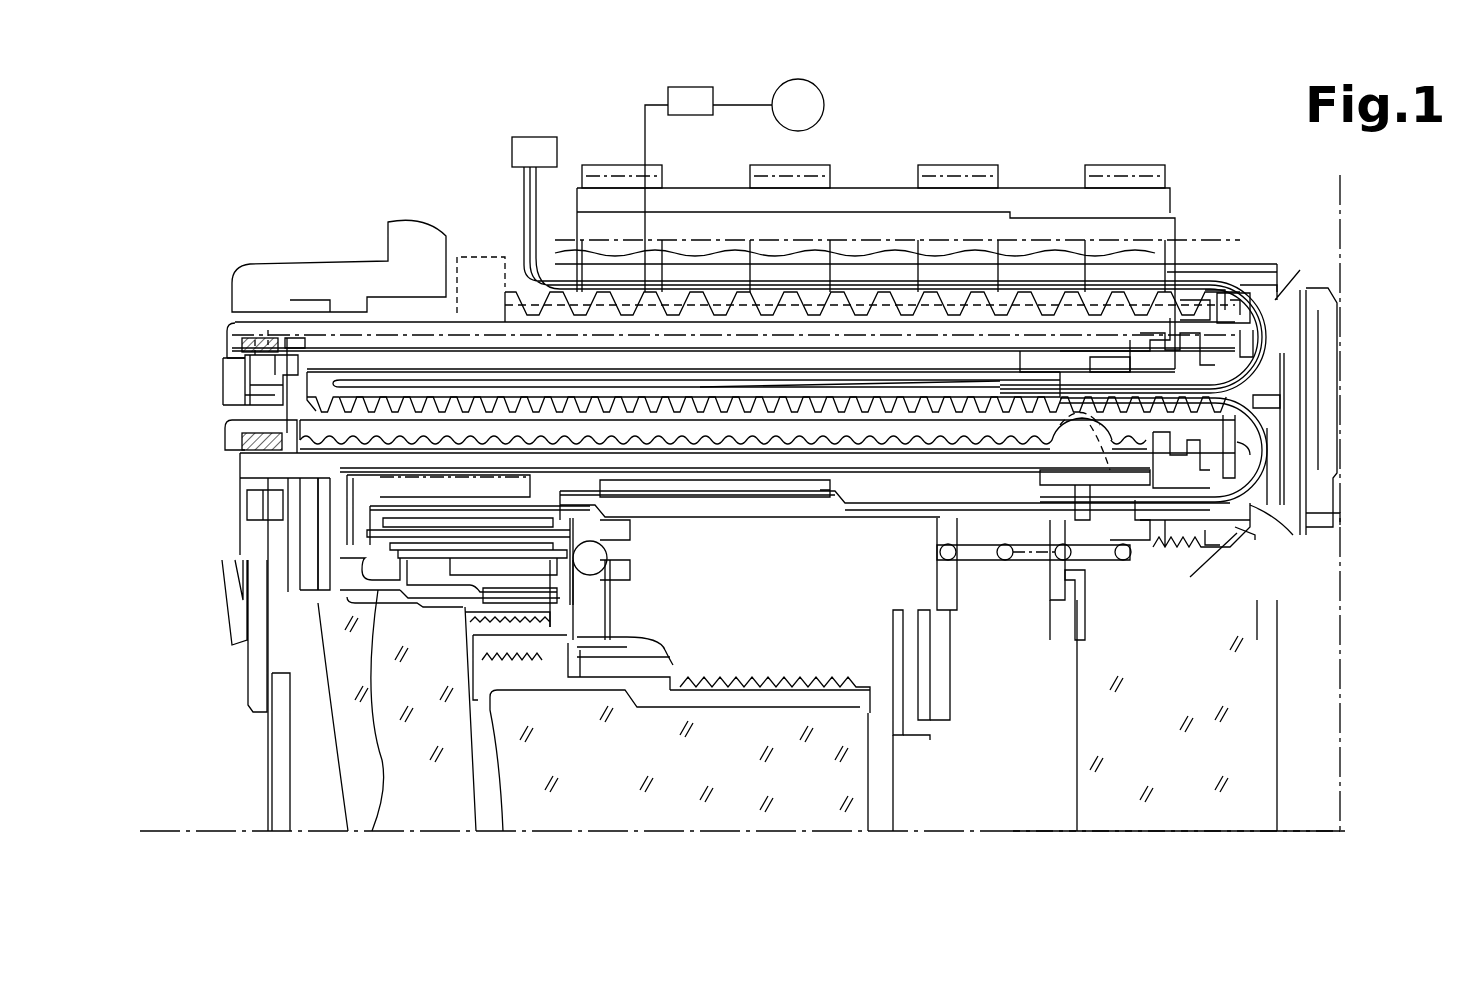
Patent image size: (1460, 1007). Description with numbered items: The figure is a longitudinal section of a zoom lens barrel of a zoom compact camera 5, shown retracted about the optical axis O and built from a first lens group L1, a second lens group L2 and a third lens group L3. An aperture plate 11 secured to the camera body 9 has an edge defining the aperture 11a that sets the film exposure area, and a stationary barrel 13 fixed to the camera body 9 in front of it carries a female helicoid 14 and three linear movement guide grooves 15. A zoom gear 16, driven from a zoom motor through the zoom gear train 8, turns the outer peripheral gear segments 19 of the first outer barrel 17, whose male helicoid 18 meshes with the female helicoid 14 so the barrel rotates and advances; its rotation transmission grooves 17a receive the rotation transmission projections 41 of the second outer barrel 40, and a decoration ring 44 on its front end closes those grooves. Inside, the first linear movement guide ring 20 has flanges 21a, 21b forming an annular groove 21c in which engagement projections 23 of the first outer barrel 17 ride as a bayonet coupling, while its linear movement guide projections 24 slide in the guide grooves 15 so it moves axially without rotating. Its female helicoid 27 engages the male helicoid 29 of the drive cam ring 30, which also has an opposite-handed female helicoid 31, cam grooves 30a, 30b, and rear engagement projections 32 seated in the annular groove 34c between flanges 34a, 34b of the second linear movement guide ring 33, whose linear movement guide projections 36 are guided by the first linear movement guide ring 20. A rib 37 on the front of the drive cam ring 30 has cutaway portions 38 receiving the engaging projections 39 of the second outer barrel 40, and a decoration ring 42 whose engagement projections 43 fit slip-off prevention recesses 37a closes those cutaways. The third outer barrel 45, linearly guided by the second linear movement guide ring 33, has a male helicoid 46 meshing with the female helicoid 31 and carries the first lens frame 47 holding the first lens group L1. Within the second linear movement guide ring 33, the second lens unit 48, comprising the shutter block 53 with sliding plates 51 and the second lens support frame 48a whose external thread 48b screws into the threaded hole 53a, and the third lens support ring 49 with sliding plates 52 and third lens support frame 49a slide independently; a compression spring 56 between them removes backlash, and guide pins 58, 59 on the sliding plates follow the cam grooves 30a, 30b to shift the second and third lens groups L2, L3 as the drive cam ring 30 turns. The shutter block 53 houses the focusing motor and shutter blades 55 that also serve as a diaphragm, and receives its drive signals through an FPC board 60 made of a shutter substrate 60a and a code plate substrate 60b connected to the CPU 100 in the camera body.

The zoom compact camera 5 is at (986, 67).
The zoom gear train 8 is at (716, 96).
The camera body 9 is at (435, 243).
The aperture plate 11 is at (1322, 322).
The aperture 11a is at (1335, 522).
The stationary barrel 13 is at (1277, 262).
The female helicoid 14 is at (1216, 300).
The linear movement guide grooves 15 is at (1303, 288).
The zoom gear 16 is at (850, 170).
The first outer barrel 17 is at (420, 320).
The rotation transmission grooves 17a is at (707, 337).
The male helicoid 18 is at (1078, 330).
The outer peripheral gear segments 19 is at (1057, 313).
The first linear movement guide ring 20 is at (905, 383).
The front flange 21a is at (1160, 340).
The flange 21b is at (1258, 345).
The annular groove 21c is at (1267, 300).
The engagement projections 23 is at (1226, 325).
The linear movement guide projections 24 is at (1250, 285).
The female helicoid 27 is at (488, 400).
The male helicoid 29 is at (457, 428).
The drive cam ring 30 is at (388, 418).
The cam grooves 30a is at (1176, 540).
The cam grooves 30b is at (1065, 415).
The female helicoid 31 is at (250, 428).
The engagement projections 32 is at (1195, 300).
The second linear movement guide ring 33 is at (795, 487).
The front flange 34a is at (1215, 530).
The flange 34b is at (1242, 528).
The annular groove 34c is at (1238, 535).
The linear movement guide projections 36 is at (1268, 495).
The rib 37 is at (233, 400).
The accidental detachment prevention recesses 37a is at (300, 345).
The cutaway portions 38 is at (255, 388).
The engaging projections 39 is at (275, 388).
The second outer barrel 40 is at (350, 360).
The rotation transmission projections 41 is at (1146, 360).
The decoration ring 42 is at (228, 385).
The engagement projections 43 is at (258, 400).
The decoration ring 44 is at (240, 272).
The third outer barrel 45 is at (348, 462).
The male helicoid 46 is at (1047, 440).
The first lens frame 47 is at (372, 831).
The second lens unit 48 is at (625, 850).
The second lens support frame 48a is at (578, 683).
The external thread 48b is at (810, 690).
The third lens support ring 49 is at (1122, 640).
The third lens support frame 49a is at (1257, 640).
The sliding plates 51 is at (992, 508).
The sliding plates 52 is at (1047, 570).
The shutter block 53 is at (900, 610).
The threaded hole 53a is at (805, 687).
The shutter blades 55 is at (893, 760).
The compression spring 56 is at (948, 533).
The guide pins 58 is at (1128, 365).
The guide pins 59 is at (1110, 350).
The FPC board 60 is at (1400, 384).
The shutter substrate 60a is at (1268, 435).
The code plate substrate 60b is at (1268, 352).
The CPU 100 is at (557, 146).
The first lens group L1 is at (412, 820).
The second lens group L2 is at (700, 822).
The third lens group L3 is at (1178, 815).
The optical axis O is at (933, 834).